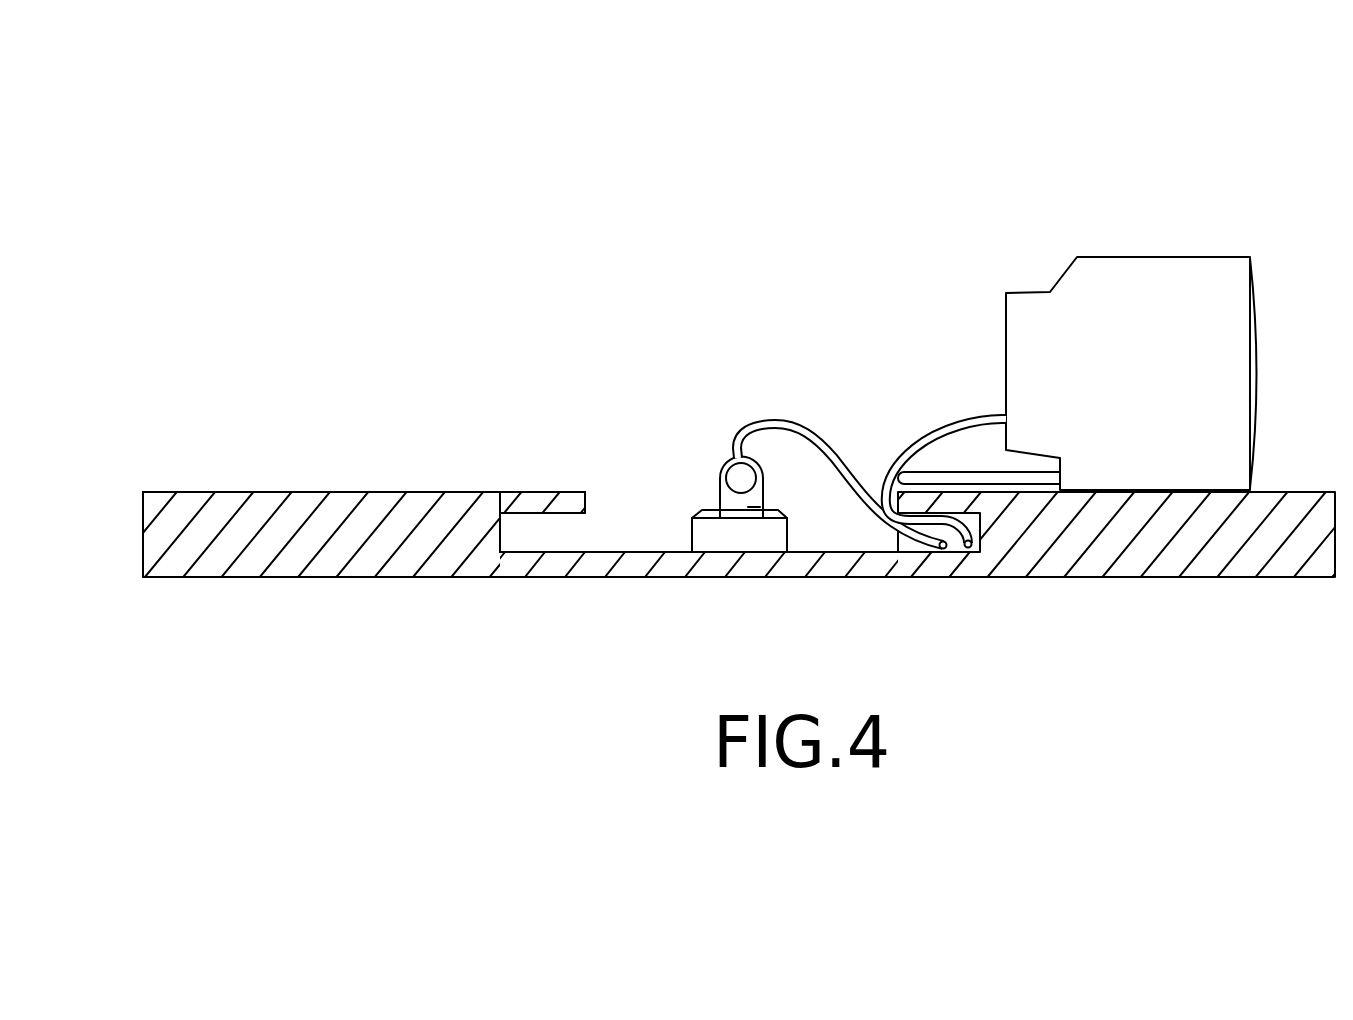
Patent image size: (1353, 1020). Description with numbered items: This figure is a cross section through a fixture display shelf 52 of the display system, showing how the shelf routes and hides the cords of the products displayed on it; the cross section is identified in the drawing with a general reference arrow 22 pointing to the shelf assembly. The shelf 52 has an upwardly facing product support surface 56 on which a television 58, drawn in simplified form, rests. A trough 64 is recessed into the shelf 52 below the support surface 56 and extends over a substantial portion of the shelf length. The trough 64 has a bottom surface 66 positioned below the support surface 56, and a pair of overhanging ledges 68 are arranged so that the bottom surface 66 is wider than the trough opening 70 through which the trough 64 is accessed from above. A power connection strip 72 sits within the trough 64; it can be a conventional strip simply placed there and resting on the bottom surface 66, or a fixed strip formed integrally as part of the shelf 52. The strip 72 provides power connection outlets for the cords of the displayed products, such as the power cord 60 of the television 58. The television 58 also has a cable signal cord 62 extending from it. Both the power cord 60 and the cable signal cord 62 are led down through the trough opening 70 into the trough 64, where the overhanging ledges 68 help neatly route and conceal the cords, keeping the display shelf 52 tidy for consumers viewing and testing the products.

The circuit board assembly 22 is at (198, 622).
The shelf 52 is at (147, 528).
The product support surface 56 is at (247, 492).
The television 58 is at (1133, 270).
The power cord 60 is at (815, 432).
The cable signal cord 62 is at (1010, 472).
The trough 64 is at (639, 520).
The bottom surface 66 is at (560, 552).
The overhanging ledges 68 is at (541, 503).
The trough opening 70 is at (588, 500).
The power connection strip 72 is at (672, 512).